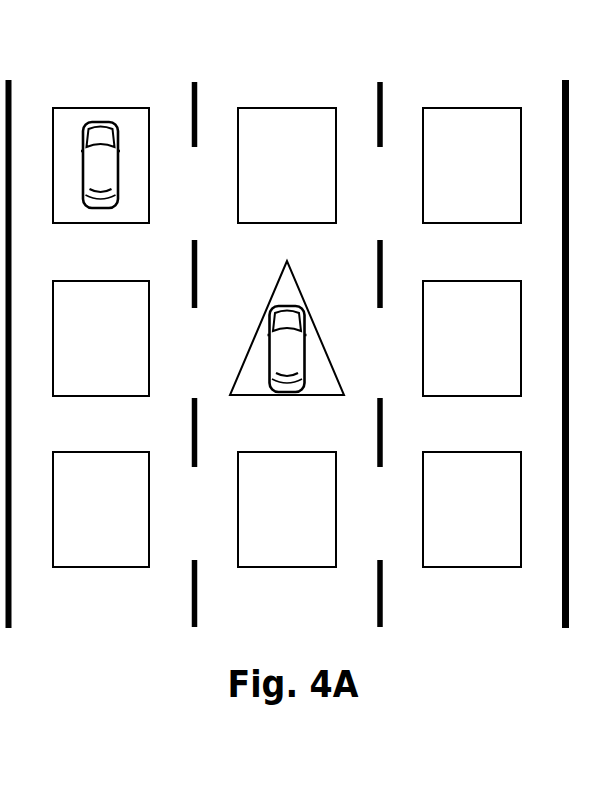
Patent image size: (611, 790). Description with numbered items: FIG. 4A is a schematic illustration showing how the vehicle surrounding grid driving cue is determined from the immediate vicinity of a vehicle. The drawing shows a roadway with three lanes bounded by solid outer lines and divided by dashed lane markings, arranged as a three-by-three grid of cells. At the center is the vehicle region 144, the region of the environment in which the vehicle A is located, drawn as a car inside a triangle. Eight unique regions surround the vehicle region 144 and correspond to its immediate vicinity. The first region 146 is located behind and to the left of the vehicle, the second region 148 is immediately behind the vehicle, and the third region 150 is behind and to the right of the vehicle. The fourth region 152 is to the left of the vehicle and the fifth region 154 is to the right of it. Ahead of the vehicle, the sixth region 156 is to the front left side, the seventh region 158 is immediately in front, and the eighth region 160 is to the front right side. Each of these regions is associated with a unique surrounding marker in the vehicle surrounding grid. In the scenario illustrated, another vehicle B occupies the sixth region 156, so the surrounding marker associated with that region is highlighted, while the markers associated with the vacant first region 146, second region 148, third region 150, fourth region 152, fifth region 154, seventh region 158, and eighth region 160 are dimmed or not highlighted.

The vehicle region 144 is at (265, 315).
The first region 146 is at (106, 452).
The second region 148 is at (308, 452).
The third region 150 is at (488, 452).
The fourth region 152 is at (82, 281).
The fifth region 154 is at (492, 281).
The sixth region 156 is at (110, 108).
The seventh region 158 is at (310, 108).
The eighth region 160 is at (495, 108).